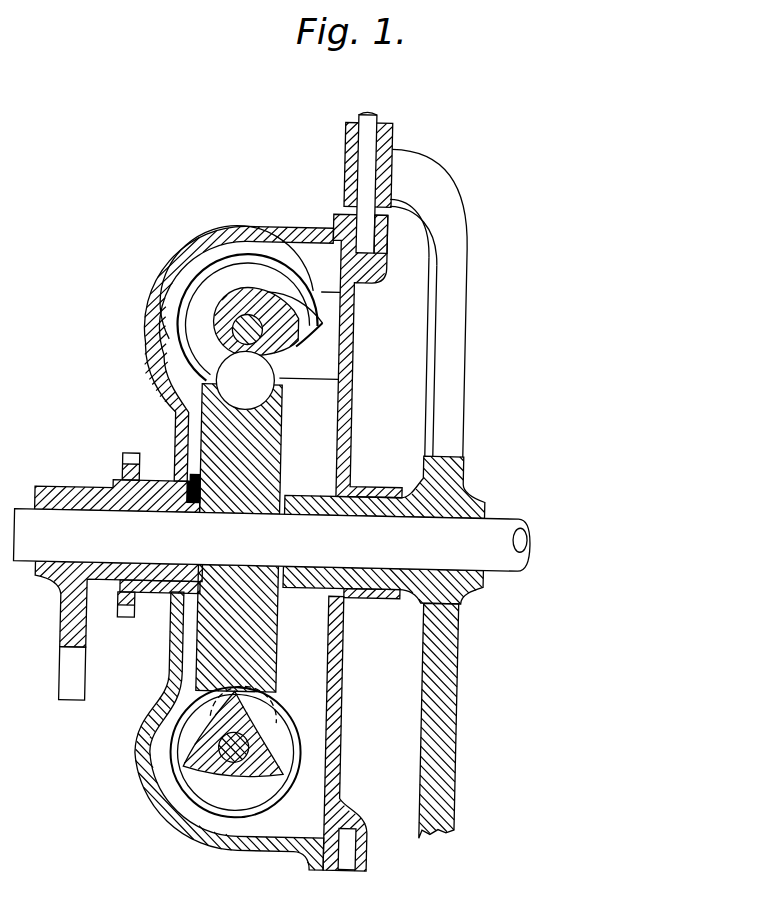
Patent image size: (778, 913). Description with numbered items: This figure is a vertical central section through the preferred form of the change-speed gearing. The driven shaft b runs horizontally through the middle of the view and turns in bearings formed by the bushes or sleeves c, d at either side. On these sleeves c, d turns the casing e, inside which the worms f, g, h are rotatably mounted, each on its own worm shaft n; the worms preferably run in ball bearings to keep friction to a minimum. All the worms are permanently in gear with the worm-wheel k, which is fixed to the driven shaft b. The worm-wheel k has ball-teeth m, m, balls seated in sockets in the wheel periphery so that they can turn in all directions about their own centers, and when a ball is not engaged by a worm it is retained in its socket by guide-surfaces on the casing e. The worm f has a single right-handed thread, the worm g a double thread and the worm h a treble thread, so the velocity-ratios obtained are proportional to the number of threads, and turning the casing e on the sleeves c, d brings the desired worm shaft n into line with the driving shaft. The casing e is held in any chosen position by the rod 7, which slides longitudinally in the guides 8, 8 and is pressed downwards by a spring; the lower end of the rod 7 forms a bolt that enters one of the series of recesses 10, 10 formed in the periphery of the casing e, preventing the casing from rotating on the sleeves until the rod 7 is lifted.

The rod 7 is at (366, 110).
The guides 8 is at (337, 127).
The recesses 10 is at (378, 229).
The driven shaft b is at (272, 540).
The bush or sleeve c is at (105, 481).
The bush or sleeve d is at (342, 729).
The casing e is at (133, 797).
The worm f is at (271, 266).
The worm g is at (123, 458).
The worm h is at (254, 800).
The worm-wheel k is at (248, 538).
The ball-teeth m is at (290, 688).
The worm shafts n is at (265, 739).